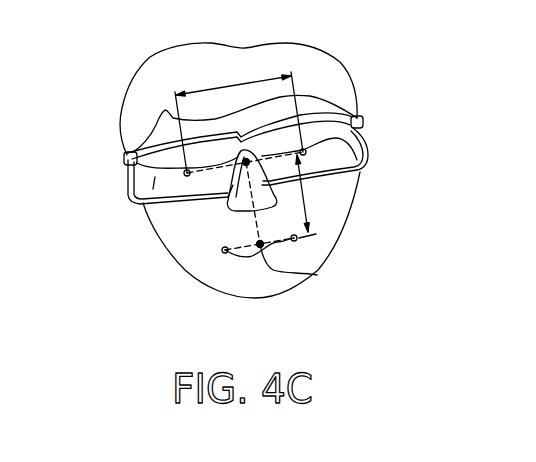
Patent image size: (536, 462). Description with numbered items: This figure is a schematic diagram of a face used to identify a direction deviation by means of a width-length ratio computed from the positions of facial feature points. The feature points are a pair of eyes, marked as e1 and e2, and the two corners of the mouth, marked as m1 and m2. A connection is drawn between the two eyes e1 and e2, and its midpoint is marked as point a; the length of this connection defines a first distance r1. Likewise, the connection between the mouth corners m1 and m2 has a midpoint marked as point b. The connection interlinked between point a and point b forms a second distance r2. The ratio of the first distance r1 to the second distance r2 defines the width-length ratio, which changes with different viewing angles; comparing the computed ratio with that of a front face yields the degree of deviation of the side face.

The eye e1 is at (128, 171).
The eye e2 is at (363, 143).
The midpoint of the connection between the eyes a is at (233, 207).
The midpoint of connection of the mouth corners b is at (317, 275).
The mouth corner m1 is at (225, 250).
The mouth corner m2 is at (294, 238).
The first distance r1 is at (239, 119).
The second distance r2 is at (299, 196).